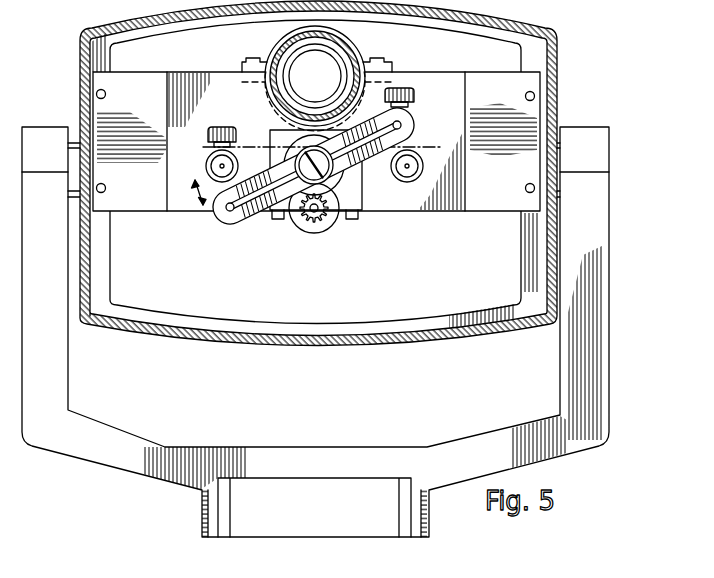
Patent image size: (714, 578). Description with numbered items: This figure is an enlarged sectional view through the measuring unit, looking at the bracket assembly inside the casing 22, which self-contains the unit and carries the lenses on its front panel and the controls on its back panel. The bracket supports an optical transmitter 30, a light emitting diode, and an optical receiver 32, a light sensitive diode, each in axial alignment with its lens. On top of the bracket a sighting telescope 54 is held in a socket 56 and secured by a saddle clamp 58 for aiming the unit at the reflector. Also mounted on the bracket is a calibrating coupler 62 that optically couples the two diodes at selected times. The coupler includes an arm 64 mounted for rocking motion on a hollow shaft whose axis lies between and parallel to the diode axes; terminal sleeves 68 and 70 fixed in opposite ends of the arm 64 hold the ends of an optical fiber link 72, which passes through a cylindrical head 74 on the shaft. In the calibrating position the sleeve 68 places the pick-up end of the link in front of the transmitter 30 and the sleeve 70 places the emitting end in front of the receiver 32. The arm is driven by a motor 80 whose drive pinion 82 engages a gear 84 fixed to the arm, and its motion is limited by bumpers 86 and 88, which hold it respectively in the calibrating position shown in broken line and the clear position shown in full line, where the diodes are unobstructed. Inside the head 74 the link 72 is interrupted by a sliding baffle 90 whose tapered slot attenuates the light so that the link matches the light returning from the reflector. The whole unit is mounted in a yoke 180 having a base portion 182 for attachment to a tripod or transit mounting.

The casing 22 is at (358, 347).
The optical transmitter 30 is at (208, 163).
The optical receiver 32 is at (419, 157).
The sighting telescope 54 is at (280, 40).
The socket 56 is at (336, 108).
The saddle clamp 58 is at (355, 43).
The calibrating coupler 62 is at (240, 235).
The arm 64 is at (226, 226).
The terminal sleeve 68 is at (225, 209).
The terminal sleeve 70 is at (412, 119).
The optical fiber link 72 is at (263, 212).
The cylindrical head 74 is at (302, 151).
The motor 80 is at (313, 233).
The drive pinion 82 is at (326, 224).
The gear 84 is at (361, 211).
The bumper 86 is at (229, 126).
The bumper 88 is at (413, 105).
The baffle 90 is at (343, 172).
The yoke 180 is at (606, 347).
The base portion 182 is at (212, 502).